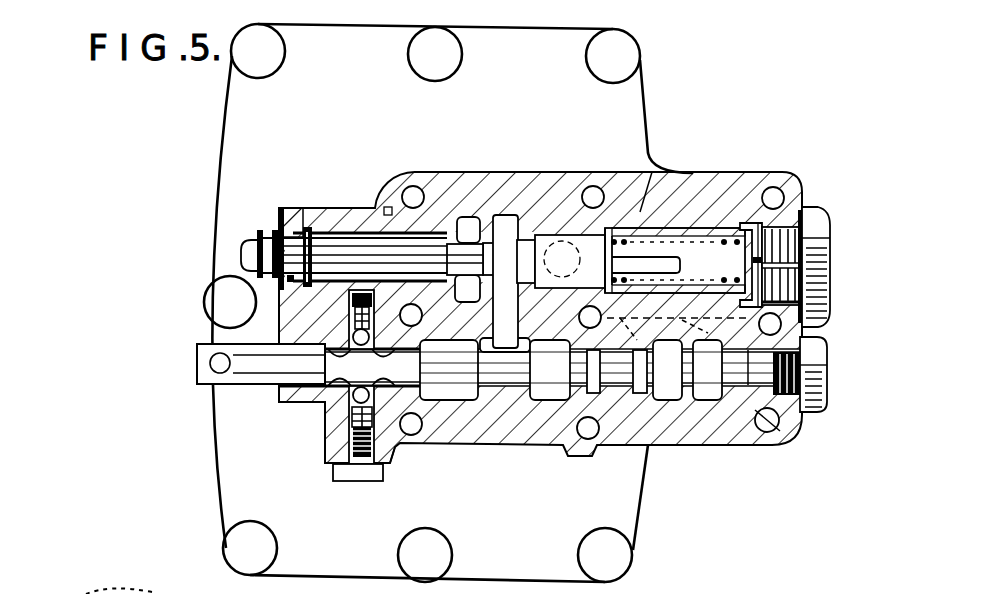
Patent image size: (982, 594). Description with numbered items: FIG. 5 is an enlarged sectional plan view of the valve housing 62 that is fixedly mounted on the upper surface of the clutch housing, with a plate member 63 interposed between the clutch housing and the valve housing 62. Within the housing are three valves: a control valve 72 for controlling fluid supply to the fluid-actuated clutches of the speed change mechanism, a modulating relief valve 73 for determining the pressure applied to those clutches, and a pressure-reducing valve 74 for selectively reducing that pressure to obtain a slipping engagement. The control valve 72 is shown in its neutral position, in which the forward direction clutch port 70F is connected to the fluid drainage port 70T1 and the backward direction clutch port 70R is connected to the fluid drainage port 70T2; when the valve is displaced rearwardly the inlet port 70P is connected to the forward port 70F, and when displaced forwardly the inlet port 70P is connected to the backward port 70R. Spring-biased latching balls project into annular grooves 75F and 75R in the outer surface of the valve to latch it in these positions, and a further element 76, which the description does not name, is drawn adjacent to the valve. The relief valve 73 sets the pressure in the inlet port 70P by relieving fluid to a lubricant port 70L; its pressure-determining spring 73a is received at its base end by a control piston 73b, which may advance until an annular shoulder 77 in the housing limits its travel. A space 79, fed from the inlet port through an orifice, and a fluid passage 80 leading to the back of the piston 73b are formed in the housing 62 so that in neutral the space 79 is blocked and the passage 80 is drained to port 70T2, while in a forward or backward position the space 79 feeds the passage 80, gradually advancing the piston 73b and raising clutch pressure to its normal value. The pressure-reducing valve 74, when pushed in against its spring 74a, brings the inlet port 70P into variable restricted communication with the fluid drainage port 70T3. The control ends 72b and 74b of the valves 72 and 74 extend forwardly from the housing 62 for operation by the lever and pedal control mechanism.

The valve housing 62 is at (735, 420).
The plate member 63 is at (222, 464).
The forward direction clutch port 70F is at (460, 398).
The backward direction clutch port 70R is at (542, 398).
The lubricant port 70L is at (518, 215).
The inlet port 70P is at (503, 323).
The fluid drainage port 70T1 is at (396, 464).
The fluid drainage port 70T2 is at (598, 398).
The fluid drainage port 70T3 is at (388, 210).
The control valve 72 is at (508, 378).
The control end of control valve 72b is at (245, 372).
The modulating relief valve 73 is at (560, 235).
The pressure-determining spring 73a is at (723, 228).
The control piston 73b is at (748, 228).
The pressure-reducing valve 74 is at (480, 200).
The spring 74a is at (318, 222).
The control end of pressure-reducing valve 74b is at (243, 243).
The annular groove 75F is at (330, 405).
The annular groove 75R is at (493, 291).
The relief valve 76 is at (347, 345).
The annular shoulder 77 is at (640, 212).
The space 79 is at (704, 398).
The fluid passage 80 is at (775, 428).